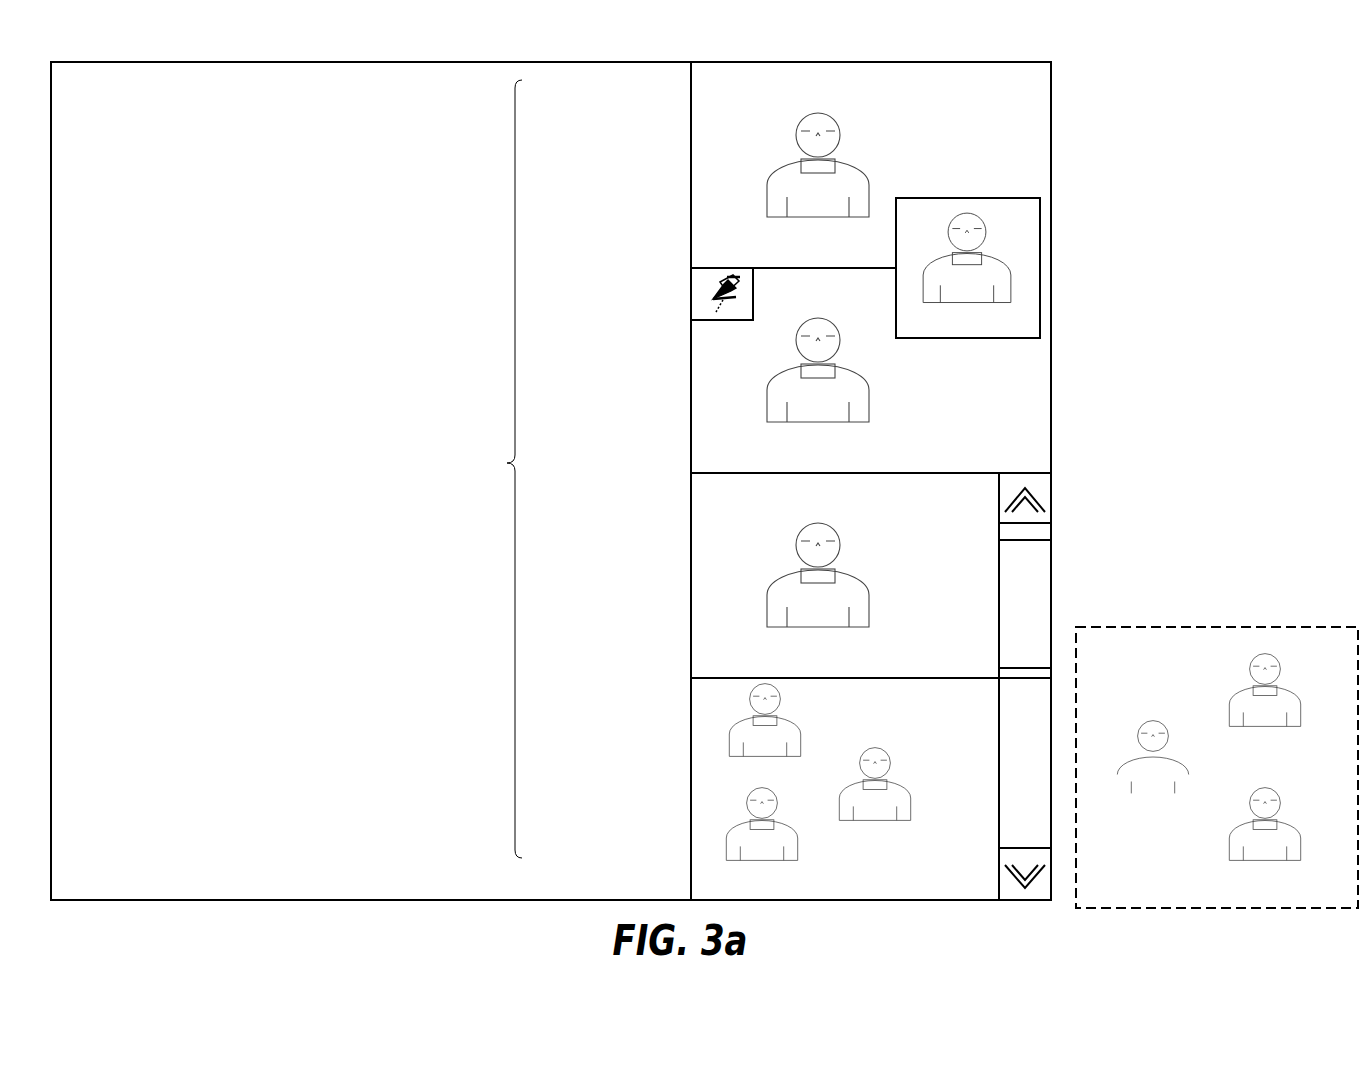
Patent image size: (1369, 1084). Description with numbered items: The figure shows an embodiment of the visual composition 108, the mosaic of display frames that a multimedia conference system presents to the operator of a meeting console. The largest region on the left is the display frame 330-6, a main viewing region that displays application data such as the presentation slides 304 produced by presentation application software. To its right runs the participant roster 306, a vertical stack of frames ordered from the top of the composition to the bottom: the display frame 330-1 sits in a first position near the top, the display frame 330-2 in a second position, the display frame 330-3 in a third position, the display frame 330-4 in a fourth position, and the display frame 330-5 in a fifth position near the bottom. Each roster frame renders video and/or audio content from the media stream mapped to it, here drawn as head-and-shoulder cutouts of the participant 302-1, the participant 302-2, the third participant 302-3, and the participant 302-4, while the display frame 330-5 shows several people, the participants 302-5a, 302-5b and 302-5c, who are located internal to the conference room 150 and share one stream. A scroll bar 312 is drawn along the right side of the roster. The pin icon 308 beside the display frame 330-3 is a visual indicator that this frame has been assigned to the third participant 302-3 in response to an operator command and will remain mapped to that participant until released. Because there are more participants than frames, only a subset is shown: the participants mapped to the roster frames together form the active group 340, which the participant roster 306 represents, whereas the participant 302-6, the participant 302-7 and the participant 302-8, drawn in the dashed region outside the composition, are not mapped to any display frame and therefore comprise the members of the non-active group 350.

The visual composition 108 is at (1252, 210).
The presentation slides 304 is at (282, 266).
The participant roster 306 is at (442, 469).
The active group 340 is at (410, 490).
The pin icon 308 is at (691, 288).
The scroll bar 312 is at (1052, 555).
The non-active group 350 is at (1308, 627).
The conference room 150 is at (907, 732).
The display frame 330-1 is at (691, 167).
The display frame 330-2 is at (1040, 308).
The display frame 330-3 is at (691, 372).
The display frame 330-4 is at (691, 577).
The display frame 330-5 is at (691, 780).
The display frame 330-6 is at (51, 632).
The participant 302-1 is at (818, 177).
The participant 302-2 is at (967, 270).
The third participant 302-3 is at (818, 382).
The participant 302-4 is at (818, 587).
The participant 302-5a is at (764, 732).
The participant 302-5b is at (876, 797).
The participant 302-5c is at (765, 836).
The participant 302-6 is at (1265, 702).
The participant 302-7 is at (1153, 769).
The participant 302-8 is at (1265, 835).